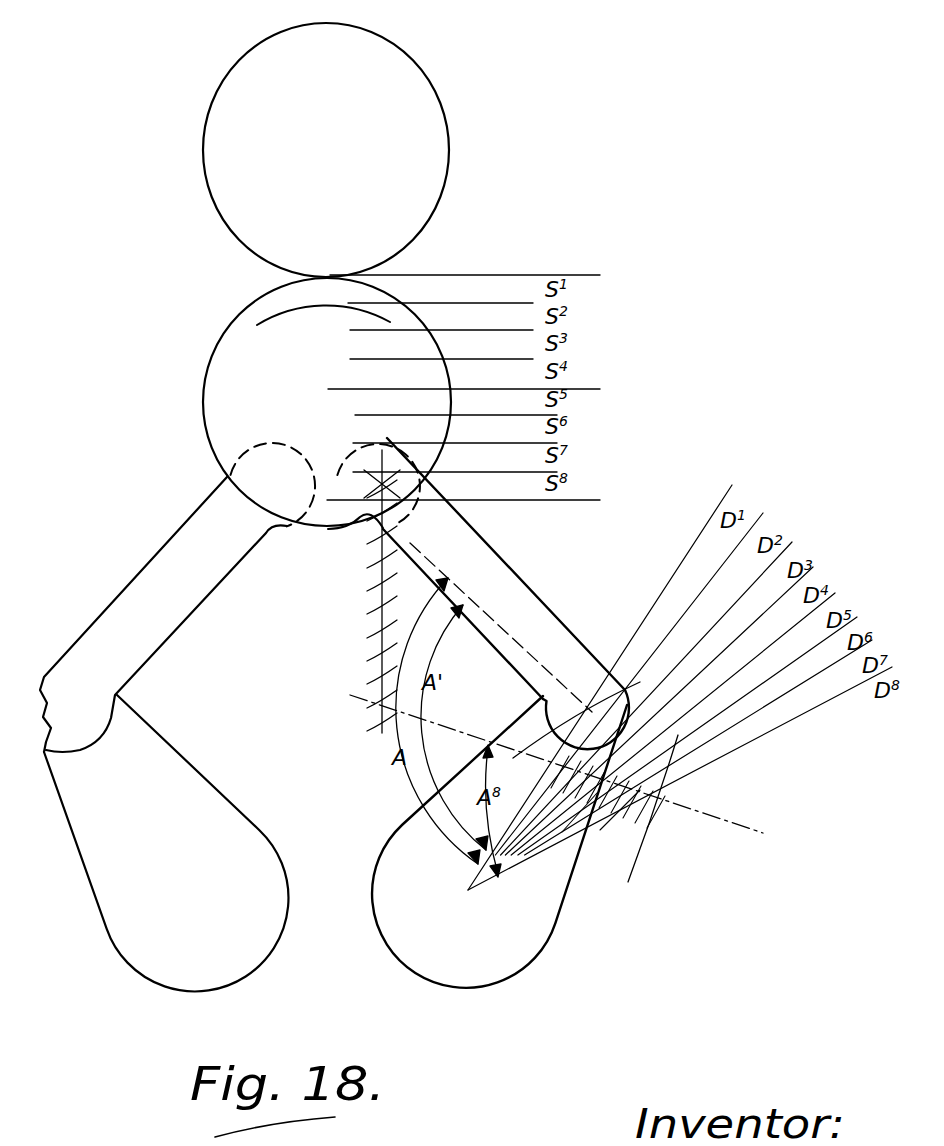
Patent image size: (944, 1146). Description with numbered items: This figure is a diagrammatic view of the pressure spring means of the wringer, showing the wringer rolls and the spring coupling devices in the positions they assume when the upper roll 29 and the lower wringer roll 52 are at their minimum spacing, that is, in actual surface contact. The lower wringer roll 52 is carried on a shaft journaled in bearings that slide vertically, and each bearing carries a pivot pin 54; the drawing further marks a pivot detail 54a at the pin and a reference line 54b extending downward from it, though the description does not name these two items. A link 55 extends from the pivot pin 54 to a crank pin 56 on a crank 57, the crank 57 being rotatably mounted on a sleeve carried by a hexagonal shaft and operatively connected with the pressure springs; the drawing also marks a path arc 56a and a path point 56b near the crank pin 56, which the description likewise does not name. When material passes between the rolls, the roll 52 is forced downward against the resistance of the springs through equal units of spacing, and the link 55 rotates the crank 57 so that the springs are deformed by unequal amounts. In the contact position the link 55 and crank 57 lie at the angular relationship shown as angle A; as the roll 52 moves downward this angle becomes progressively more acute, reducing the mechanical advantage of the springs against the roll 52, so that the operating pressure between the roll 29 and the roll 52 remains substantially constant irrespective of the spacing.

The wringer roll 29 is at (448, 119).
The lower wringer roll 52 is at (218, 350).
The pivot pin 54 is at (383, 476).
The pivot hook 54a is at (358, 522).
The reference line 54b is at (382, 725).
The link 55 is at (537, 597).
The crank pin 56 is at (557, 790).
The roller path arc 56a is at (640, 682).
The roller path point 56b is at (667, 802).
The crank 57 is at (557, 922).